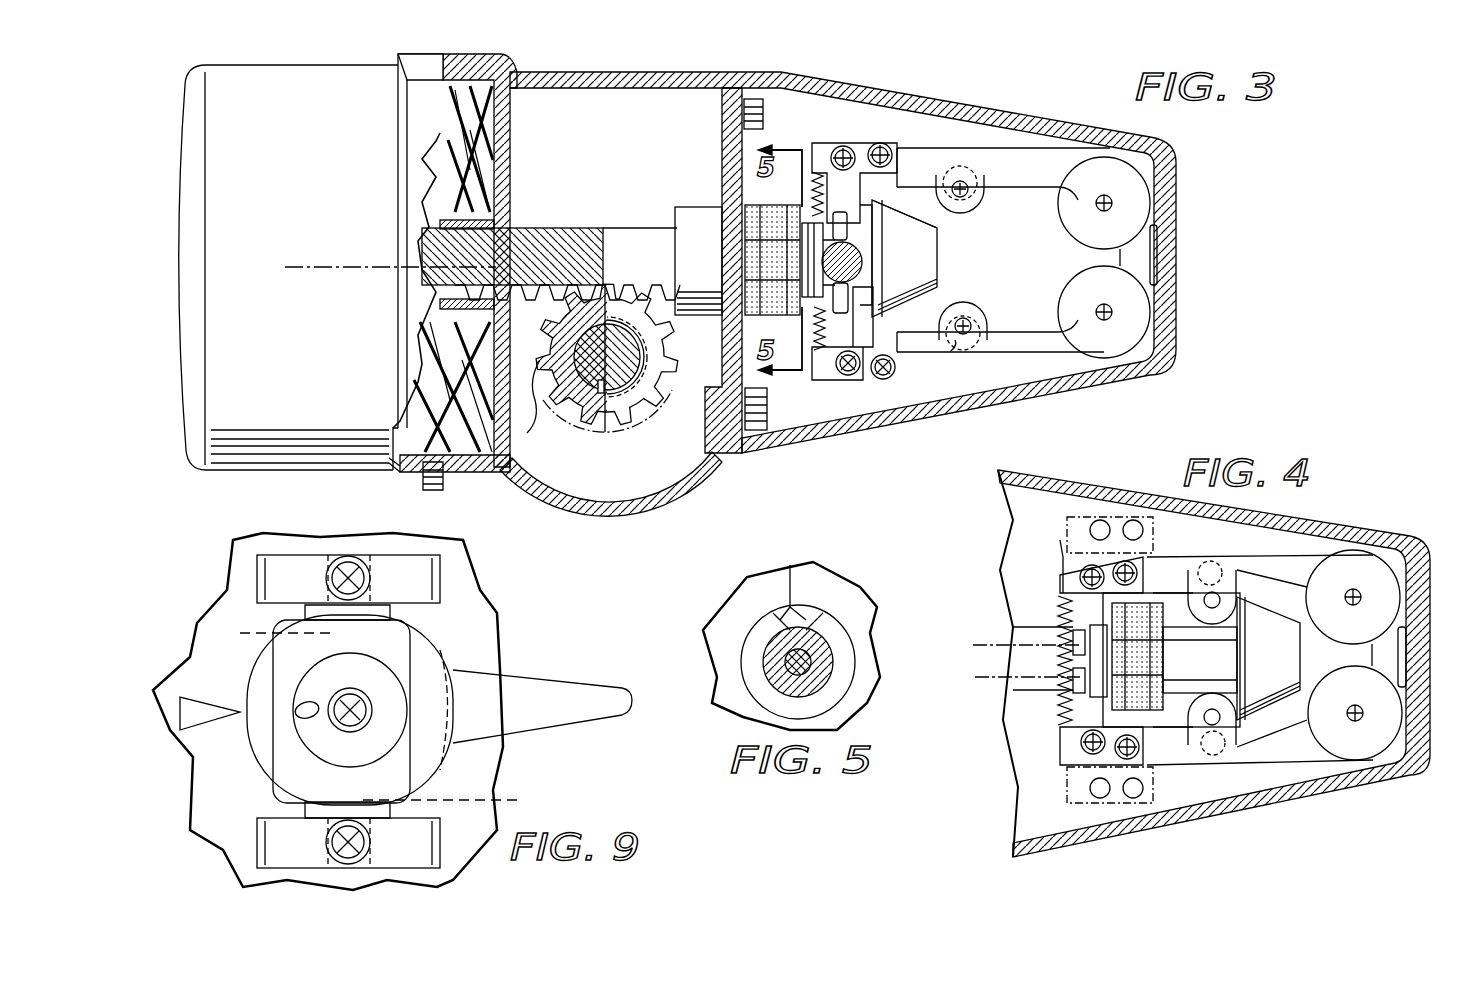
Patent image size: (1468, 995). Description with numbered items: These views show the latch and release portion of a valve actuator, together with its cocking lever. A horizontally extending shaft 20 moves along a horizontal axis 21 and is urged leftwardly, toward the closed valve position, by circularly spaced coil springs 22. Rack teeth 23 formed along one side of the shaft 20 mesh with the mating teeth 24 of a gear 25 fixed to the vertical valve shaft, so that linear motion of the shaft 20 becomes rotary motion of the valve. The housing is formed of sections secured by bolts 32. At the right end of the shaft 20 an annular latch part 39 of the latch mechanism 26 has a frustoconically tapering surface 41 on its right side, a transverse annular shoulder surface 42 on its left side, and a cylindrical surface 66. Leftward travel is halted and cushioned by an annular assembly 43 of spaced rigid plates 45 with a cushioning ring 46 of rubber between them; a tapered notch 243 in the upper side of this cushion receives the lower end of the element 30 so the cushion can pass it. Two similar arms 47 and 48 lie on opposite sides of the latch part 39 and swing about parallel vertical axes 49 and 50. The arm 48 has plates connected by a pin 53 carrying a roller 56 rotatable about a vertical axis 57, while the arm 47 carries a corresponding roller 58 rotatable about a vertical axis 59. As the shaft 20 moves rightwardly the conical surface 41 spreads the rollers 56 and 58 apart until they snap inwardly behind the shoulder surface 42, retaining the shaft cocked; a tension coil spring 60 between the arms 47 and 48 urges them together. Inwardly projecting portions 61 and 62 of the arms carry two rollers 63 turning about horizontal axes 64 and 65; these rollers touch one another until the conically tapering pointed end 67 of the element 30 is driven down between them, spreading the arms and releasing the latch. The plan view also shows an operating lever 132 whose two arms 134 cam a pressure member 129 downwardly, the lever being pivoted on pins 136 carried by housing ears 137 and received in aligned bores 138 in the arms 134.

In FIG. 3, the shaft 20 is at (532, 230).
In FIG. 3, the horizontal axis 21 is at (335, 270).
In FIG. 3, the coil springs 22 is at (462, 160).
In FIG. 3, the rack teeth 23 is at (440, 303).
In FIG. 3, the gear teeth 24 is at (597, 371).
In FIG. 3, the gear 25 is at (582, 422).
In FIG. 3, the latch mechanism 26 is at (963, 125).
In FIG. 4, the latch mechanism 26 is at (1275, 790).
In FIG. 3, the element 30 is at (865, 258).
In FIG. 3, the bolts 32 is at (764, 114).
In FIG. 3, the latch part 39 is at (885, 312).
In FIG. 4, the latch part 39 is at (1280, 658).
In FIG. 3, the frustoconically tapering surface 41 is at (900, 225).
In FIG. 4, the frustoconically tapering surface 41 is at (1310, 600).
In FIG. 3, the annular shoulder surface 42 is at (870, 215).
In FIG. 4, the annular shoulder surface 42 is at (1230, 645).
In FIG. 3, the annular assembly 43 is at (760, 200).
In FIG. 5, the annular assembly 43 is at (860, 662).
In FIG. 3, the rigid plates 45 is at (805, 235).
In FIG. 3, the cushioning ring 46 is at (740, 300).
In FIG. 3, the arm 47 is at (1035, 165).
In FIG. 4, the arm 47 is at (1270, 558).
In FIG. 3, the arm 48 is at (1085, 352).
In FIG. 4, the arm 48 is at (1320, 765).
In FIG. 3, the vertical axis 49 is at (1112, 200).
In FIG. 4, the vertical axis 49 is at (1361, 592).
In FIG. 3, the vertical axis 50 is at (1112, 310).
In FIG. 4, the vertical axis 50 is at (1363, 712).
In FIG. 3, the pin 53 is at (955, 352).
In FIG. 3, the roller 56 is at (975, 322).
In FIG. 4, the roller 56 is at (1200, 712).
In FIG. 3, the vertical axis 57 is at (968, 318).
In FIG. 3, the roller 58 is at (970, 195).
In FIG. 4, the roller 58 is at (1204, 594).
In FIG. 3, the vertical axis 59 is at (962, 182).
In FIG. 4, the coil spring 60 is at (1060, 712).
In FIG. 3, the inwardly projecting portion 61 is at (818, 172).
In FIG. 4, the inwardly projecting portion 61 is at (1085, 615).
In FIG. 3, the inwardly projecting portion 62 is at (860, 365).
In FIG. 4, the inwardly projecting portion 62 is at (1090, 710).
In FIG. 3, the rollers 63 is at (842, 212).
In FIG. 4, the rollers 63 is at (1090, 660).
In FIG. 4, the horizontal axis 64 is at (995, 645).
In FIG. 4, the horizontal axis 65 is at (990, 678).
In FIG. 4, the cylindrical surface 66 is at (1204, 724).
In FIG. 3, the conically tapering pointed end 67 is at (835, 262).
In FIG. 9, the pressure member 129 is at (247, 676).
In FIG. 9, the operating lever 132 is at (550, 685).
In FIG. 9, the arms 134 is at (395, 622).
In FIG. 9, the pins 136 is at (310, 560).
In FIG. 9, the ears 137 is at (405, 588).
In FIG. 9, the bores 138 is at (240, 633).
In FIG. 5, the tapered notch 243 is at (790, 565).